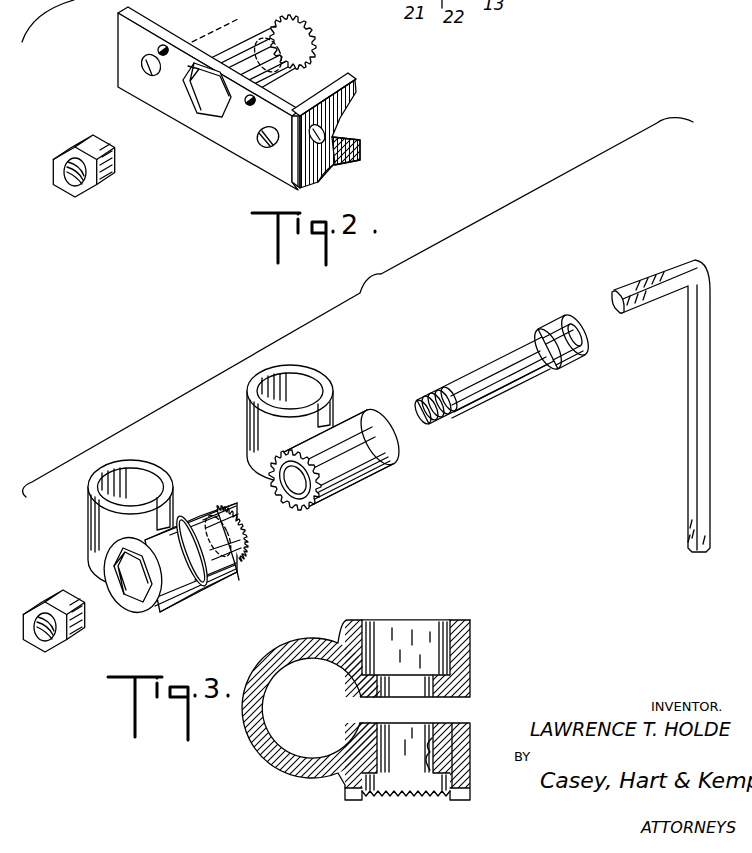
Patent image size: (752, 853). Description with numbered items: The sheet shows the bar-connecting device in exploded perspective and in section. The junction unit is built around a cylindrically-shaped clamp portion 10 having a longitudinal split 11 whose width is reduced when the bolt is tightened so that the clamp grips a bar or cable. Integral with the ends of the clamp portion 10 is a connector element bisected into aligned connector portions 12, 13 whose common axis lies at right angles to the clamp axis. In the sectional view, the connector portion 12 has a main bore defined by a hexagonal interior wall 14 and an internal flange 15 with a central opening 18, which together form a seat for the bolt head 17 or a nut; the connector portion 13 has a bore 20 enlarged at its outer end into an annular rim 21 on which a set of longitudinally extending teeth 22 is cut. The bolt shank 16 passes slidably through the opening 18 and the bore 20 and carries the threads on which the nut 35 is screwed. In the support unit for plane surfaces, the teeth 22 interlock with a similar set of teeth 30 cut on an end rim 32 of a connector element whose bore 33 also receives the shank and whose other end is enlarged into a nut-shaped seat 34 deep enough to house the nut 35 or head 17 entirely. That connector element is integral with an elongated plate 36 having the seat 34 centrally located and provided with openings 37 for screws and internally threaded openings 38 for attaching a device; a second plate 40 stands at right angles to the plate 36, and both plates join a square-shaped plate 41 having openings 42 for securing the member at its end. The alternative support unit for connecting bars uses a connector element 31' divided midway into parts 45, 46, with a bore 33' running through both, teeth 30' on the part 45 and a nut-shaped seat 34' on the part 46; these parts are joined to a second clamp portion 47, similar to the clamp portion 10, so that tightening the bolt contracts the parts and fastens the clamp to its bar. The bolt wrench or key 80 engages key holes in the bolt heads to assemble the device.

In FIG. 1, the clamp portion 10 is at (303, 381).
In FIG. 3, the clamp portion 10 is at (291, 638).
In FIG. 1, the longitudinal split 11 is at (330, 413).
In FIG. 3, the longitudinal split 11 is at (460, 710).
In FIG. 1, the connector portion 12 is at (383, 422).
In FIG. 3, the connector portion 12 is at (470, 629).
In FIG. 1, the connector portion 13 is at (338, 490).
In FIG. 3, the connector portion 13 is at (470, 782).
In FIG. 3, the interior wall 14 is at (445, 643).
In FIG. 3, the internal flange 15 is at (440, 682).
In FIG. 1, the bolt shank 16 is at (497, 365).
In FIG. 1, the bolt head 17 is at (571, 312).
In FIG. 3, the central opening 18 is at (430, 683).
In FIG. 1, the bore 20 is at (308, 512).
In FIG. 3, the bore 20 is at (432, 738).
In FIG. 3, the rim 21 is at (460, 770).
In FIG. 3, the teeth 22 is at (395, 792).
In FIG. 2, the teeth 30 is at (277, 61).
In FIG. 2, the end rim 32 is at (294, 22).
In FIG. 2, the bore 33 is at (207, 47).
In FIG. 2, the nut-shaped seat 34 is at (198, 126).
In FIG. 2, the nut 35 is at (108, 152).
In FIG. 3, the nut 35 is at (42, 592).
In FIG. 2, the plate 36 is at (247, 154).
In FIG. 2, the opening 37 is at (141, 60).
In FIG. 2, the internally threaded opening 38 is at (166, 46).
In FIG. 2, the plate 40 is at (334, 140).
In FIG. 2, the square-shaped plate 41 is at (352, 80).
In FIG. 2, the openings 42 is at (318, 153).
In FIG. 3, the part 45 is at (218, 567).
In FIG. 3, the part 46 is at (174, 597).
In FIG. 3, the clamp portion 47 is at (143, 470).
In FIG. 3, the teeth 30' is at (225, 528).
In FIG. 3, the connector element 31' is at (219, 613).
In FIG. 3, the bore 33' is at (214, 507).
In FIG. 3, the nut-shaped seat 34' is at (133, 590).
In FIG. 1, the bolt wrench or key 80 is at (703, 386).